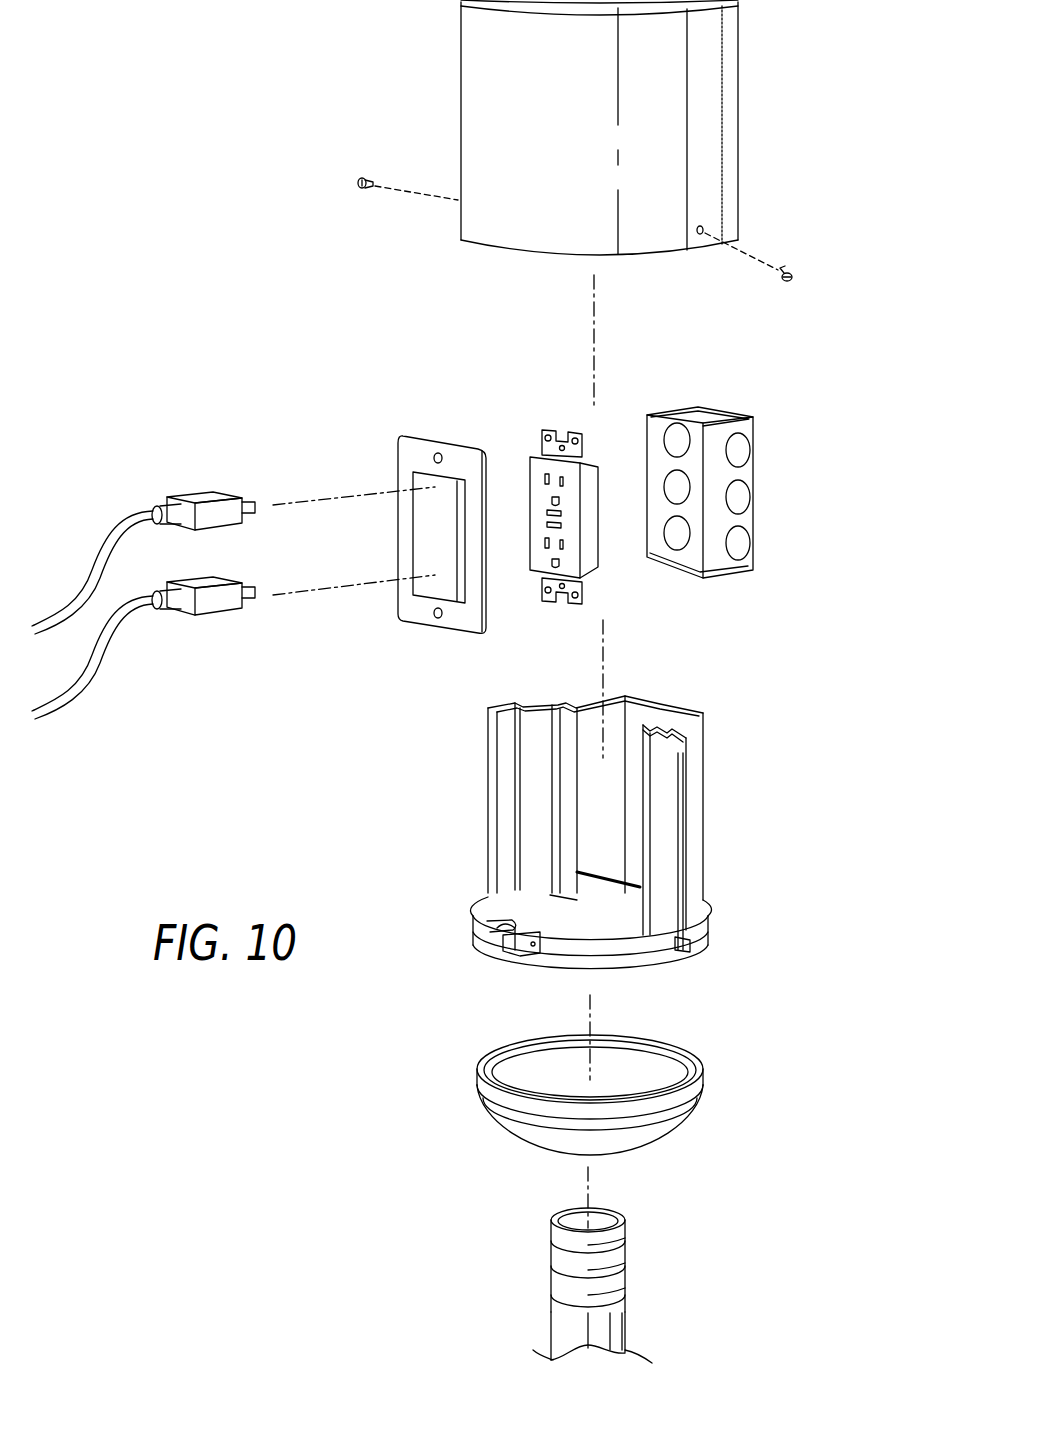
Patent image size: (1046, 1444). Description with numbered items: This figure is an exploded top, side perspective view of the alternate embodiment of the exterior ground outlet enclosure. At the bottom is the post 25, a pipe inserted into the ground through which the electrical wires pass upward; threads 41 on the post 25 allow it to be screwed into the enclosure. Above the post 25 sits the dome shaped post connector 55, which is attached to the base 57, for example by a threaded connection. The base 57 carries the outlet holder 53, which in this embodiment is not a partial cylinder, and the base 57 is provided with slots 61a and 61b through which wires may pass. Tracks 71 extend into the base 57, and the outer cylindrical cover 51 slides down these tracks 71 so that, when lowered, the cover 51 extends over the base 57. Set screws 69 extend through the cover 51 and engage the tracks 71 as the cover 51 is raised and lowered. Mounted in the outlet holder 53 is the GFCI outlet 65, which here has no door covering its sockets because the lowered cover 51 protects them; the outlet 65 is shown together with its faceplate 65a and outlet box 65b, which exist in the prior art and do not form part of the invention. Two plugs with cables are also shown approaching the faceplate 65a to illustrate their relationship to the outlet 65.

The outer cylindrical cover 51 is at (710, 90).
The set screws 69 is at (795, 277).
The faceplate 65a is at (408, 453).
The GFCI outlet 65 is at (540, 467).
The outlet box 65b is at (747, 515).
The outlet holder 53 is at (693, 840).
The base 57 is at (708, 917).
The tracks 71 is at (683, 937).
The slot 61a is at (497, 925).
The slot 61b is at (535, 938).
The dome shaped post connector 55 is at (542, 1137).
The threads 41 is at (618, 1257).
The post 25 is at (551, 1327).